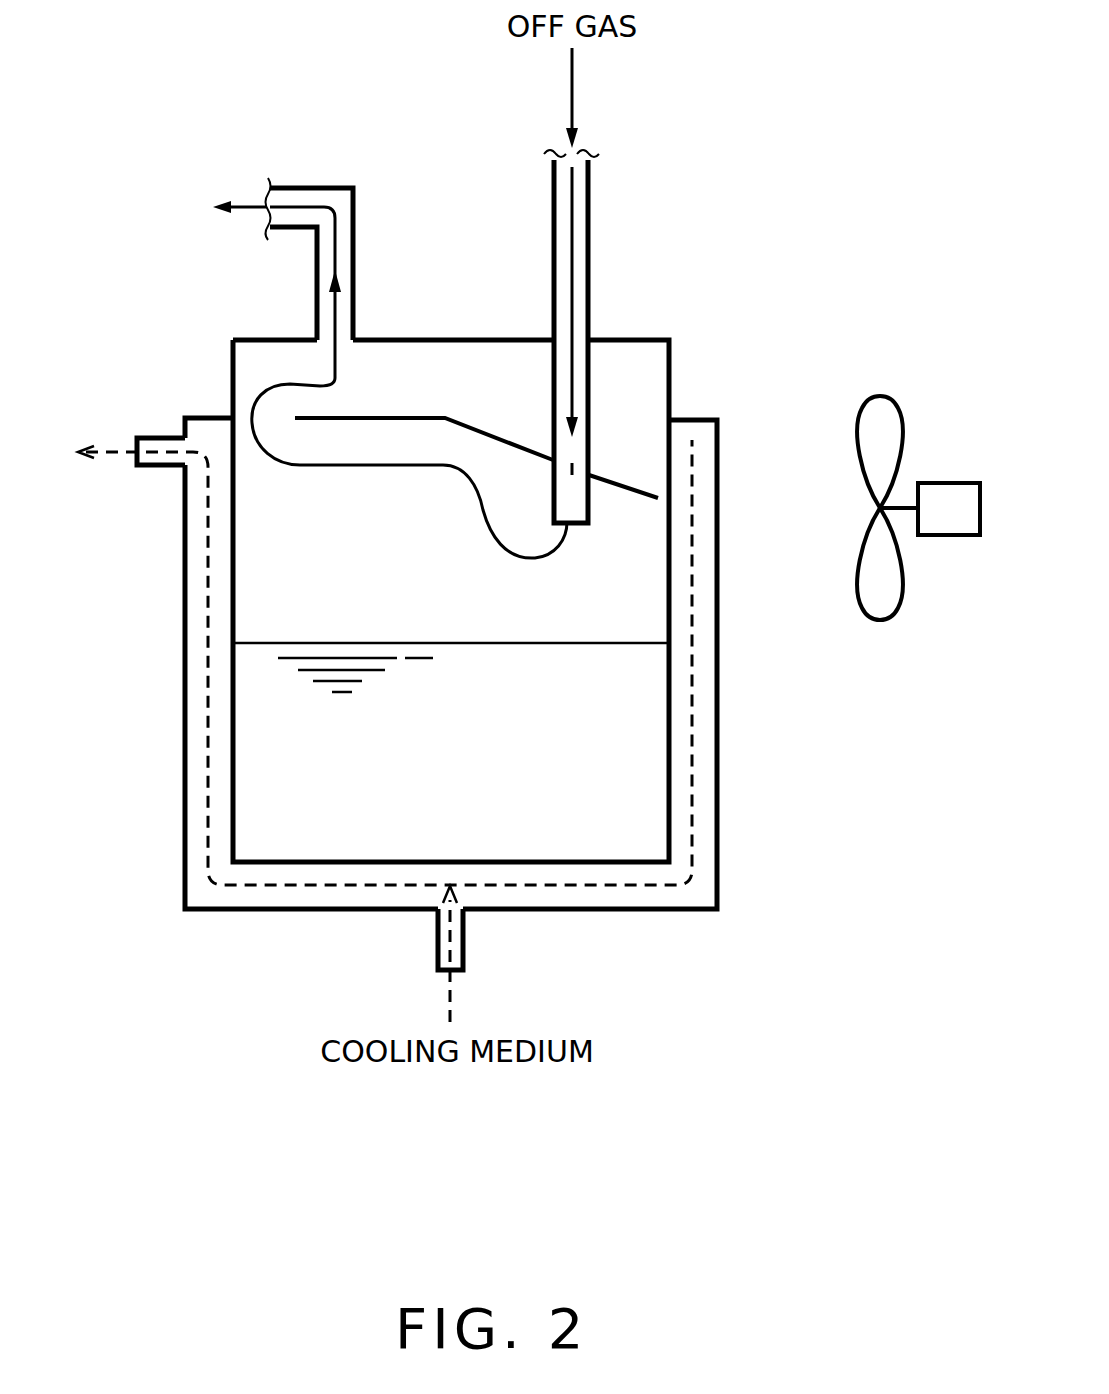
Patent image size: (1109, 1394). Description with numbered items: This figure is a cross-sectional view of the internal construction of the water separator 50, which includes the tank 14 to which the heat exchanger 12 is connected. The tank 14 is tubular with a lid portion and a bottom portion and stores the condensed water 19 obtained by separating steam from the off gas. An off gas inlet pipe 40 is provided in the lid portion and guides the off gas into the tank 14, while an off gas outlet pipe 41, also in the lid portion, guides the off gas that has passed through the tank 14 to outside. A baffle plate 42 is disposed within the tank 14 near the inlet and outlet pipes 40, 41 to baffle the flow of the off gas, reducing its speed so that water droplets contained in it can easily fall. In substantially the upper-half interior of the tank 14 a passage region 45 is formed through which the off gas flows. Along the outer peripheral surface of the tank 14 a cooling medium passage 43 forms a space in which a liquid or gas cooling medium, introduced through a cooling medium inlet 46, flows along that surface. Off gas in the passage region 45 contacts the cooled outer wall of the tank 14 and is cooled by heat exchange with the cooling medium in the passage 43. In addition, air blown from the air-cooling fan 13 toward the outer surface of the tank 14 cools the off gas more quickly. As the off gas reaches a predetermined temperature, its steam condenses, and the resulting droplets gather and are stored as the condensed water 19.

The water separator 50 is at (828, 189).
The tank 14 is at (673, 381).
The off gas outlet pipe 41 is at (355, 268).
The off gas inlet pipe 40 is at (591, 265).
The baffle plate 42 is at (487, 432).
The passage region 45 is at (431, 588).
The condensed water 19 is at (440, 760).
The heat exchanger 12 is at (728, 927).
The cooling medium passage 43 is at (720, 808).
The cooling medium inlet 46 is at (466, 938).
The air-cooling fan 13 is at (880, 622).